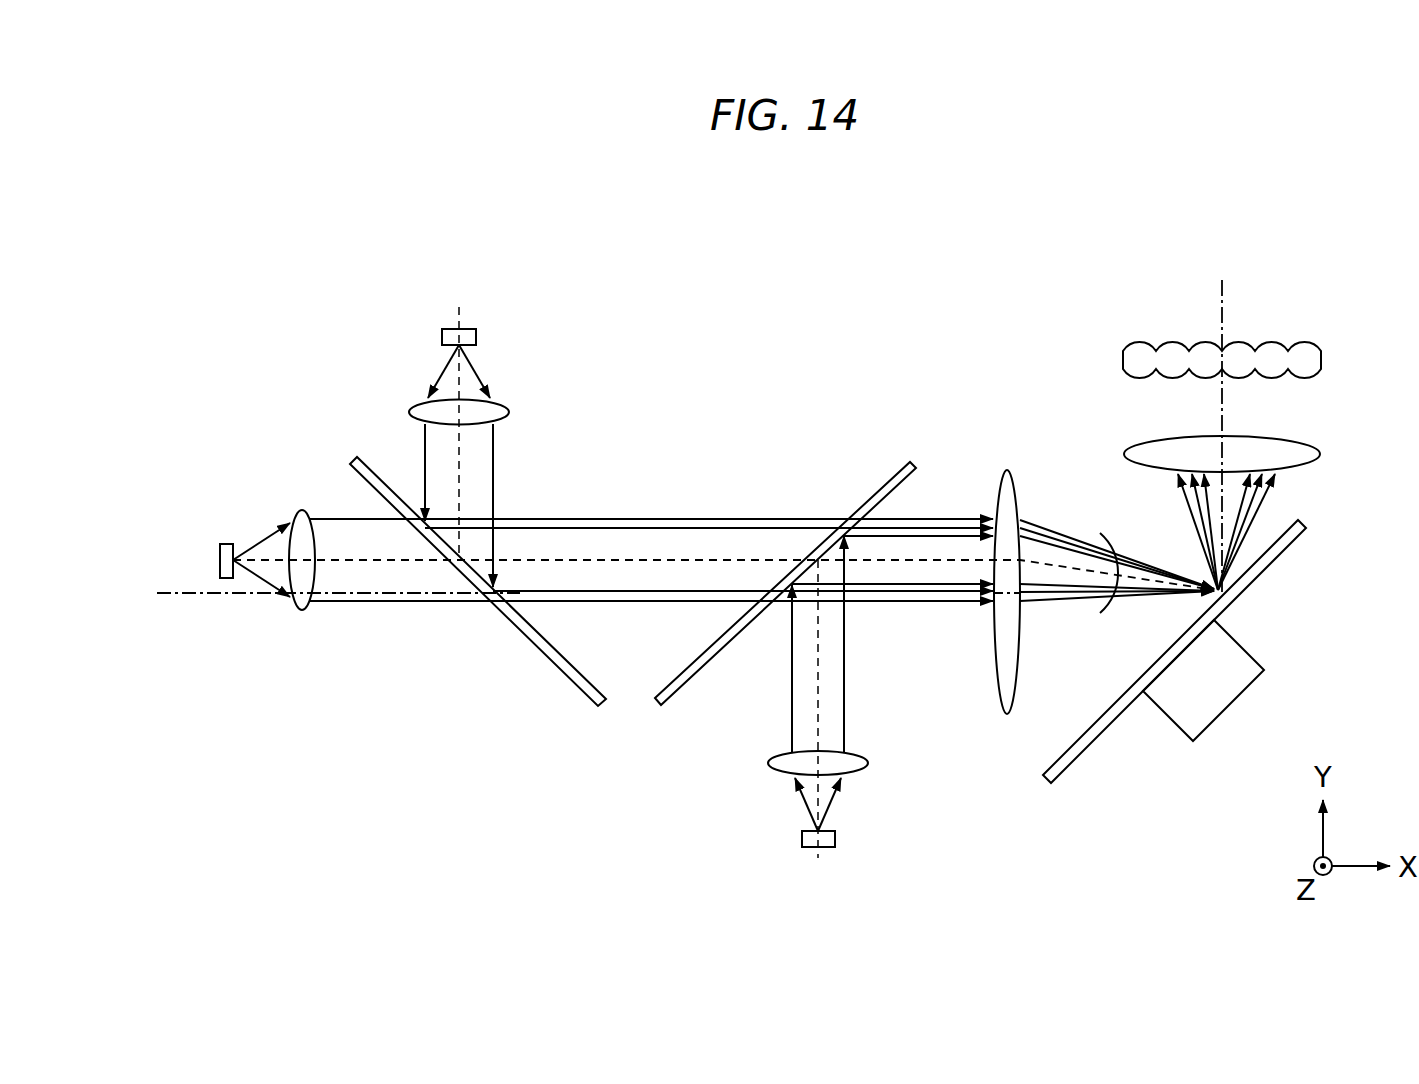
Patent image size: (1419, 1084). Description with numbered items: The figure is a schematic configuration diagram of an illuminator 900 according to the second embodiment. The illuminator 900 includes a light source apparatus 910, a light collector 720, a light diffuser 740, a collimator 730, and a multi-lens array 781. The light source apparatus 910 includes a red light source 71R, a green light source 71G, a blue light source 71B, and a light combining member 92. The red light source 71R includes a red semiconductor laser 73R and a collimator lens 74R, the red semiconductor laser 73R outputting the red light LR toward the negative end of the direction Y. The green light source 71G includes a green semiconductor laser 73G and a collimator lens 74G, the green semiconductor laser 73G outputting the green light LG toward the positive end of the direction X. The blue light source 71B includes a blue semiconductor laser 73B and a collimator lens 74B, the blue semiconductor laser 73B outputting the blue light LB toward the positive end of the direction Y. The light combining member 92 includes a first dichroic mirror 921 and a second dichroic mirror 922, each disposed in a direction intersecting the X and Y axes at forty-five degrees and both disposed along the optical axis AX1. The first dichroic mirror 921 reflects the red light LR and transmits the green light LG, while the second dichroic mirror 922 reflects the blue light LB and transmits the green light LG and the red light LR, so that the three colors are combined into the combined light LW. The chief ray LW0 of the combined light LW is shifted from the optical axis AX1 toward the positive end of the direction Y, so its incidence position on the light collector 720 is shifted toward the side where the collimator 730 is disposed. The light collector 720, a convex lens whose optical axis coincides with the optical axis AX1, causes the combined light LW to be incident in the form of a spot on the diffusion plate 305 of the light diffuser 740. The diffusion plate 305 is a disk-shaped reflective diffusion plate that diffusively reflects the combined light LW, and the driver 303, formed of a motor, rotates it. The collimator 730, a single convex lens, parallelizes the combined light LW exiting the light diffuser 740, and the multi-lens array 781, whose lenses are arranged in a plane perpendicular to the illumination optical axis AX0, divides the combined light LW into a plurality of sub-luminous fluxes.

The illuminator 900 is at (779, 275).
The light source apparatus 910 is at (648, 340).
The light combining member 92 is at (704, 482).
The red light source 71R is at (479, 347).
The red semiconductor laser 73R is at (476, 337).
The collimator lens 74R is at (509, 412).
The green light source 71G is at (259, 555).
The green semiconductor laser 73G is at (227, 580).
The collimator lens 74G is at (302, 612).
The blue light source 71B is at (838, 815).
The blue semiconductor laser 73B is at (835, 839).
The collimator lens 74B is at (867, 763).
The first dichroic mirror 921 is at (573, 683).
The second dichroic mirror 922 is at (695, 680).
The light collector 720 is at (1007, 470).
The collimator 730 is at (1320, 454).
The multi-lens array 781 is at (1321, 360).
The driver 303 is at (1215, 700).
The diffusion plate 305 is at (1092, 740).
The light diffuser 740 is at (1145, 808).
The red light LR is at (493, 472).
The green light LG is at (405, 603).
The blue light LB is at (845, 703).
The chief ray LW0 is at (952, 557).
The combined light LW is at (1103, 532).
The illumination optical axis AX0 is at (1224, 300).
The optical axis AX1 is at (183, 598).